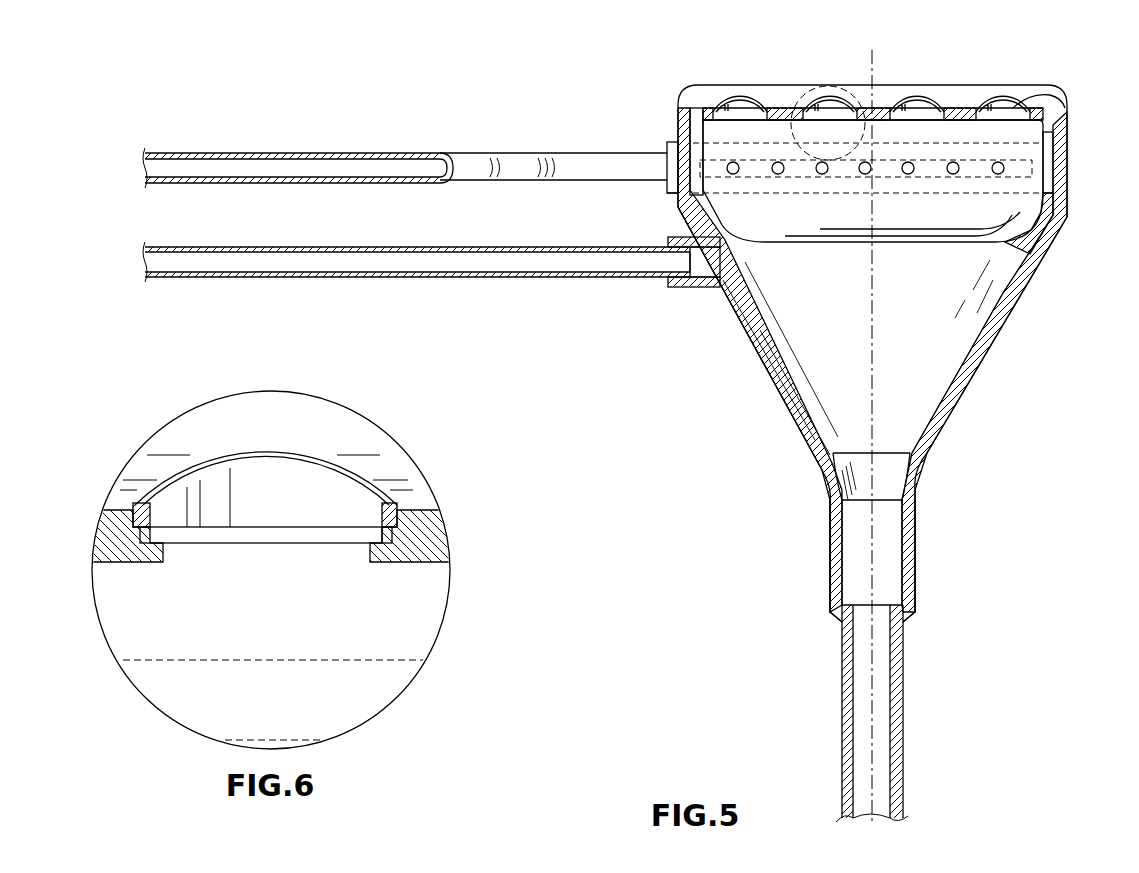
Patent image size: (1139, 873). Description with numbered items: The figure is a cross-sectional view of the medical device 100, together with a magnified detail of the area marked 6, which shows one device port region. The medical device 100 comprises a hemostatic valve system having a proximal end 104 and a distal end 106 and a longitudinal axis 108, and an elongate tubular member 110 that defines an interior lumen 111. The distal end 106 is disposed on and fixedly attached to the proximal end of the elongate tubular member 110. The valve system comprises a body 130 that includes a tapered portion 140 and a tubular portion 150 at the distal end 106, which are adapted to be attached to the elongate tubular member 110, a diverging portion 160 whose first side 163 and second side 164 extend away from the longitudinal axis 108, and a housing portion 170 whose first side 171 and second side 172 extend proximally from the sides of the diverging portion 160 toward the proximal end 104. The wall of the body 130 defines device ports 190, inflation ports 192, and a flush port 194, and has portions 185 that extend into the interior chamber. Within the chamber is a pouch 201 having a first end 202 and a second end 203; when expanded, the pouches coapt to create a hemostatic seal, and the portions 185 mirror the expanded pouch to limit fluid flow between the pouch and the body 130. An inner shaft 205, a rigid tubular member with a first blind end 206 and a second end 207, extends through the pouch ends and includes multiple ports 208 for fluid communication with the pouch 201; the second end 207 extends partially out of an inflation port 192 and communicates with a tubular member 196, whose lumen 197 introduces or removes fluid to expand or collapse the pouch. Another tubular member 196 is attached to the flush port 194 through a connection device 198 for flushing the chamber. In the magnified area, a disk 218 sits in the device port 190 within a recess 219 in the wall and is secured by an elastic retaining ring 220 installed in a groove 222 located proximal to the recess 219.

In FIG. 5, the medical device 100 is at (624, 485).
In FIG. 5, the proximal end 104 is at (663, 86).
In FIG. 5, the distal end 106 is at (797, 658).
In FIG. 5, the longitudinal axis 108 is at (876, 763).
In FIG. 5, the elongate tubular member 110 is at (905, 720).
In FIG. 5, the interior lumen 111 is at (864, 743).
In FIG. 5, the body 130 is at (787, 102).
In FIG. 5, the tapered portion 140 is at (916, 613).
In FIG. 5, the tubular portion 150 is at (916, 555).
In FIG. 5, the diverging portion 160 is at (917, 483).
In FIG. 5, the first side 163 is at (823, 471).
In FIG. 5, the second side 164 is at (919, 453).
In FIG. 5, the housing portion 170 is at (972, 362).
In FIG. 5, the first side 171 is at (760, 362).
In FIG. 5, the second side 172 is at (1012, 323).
In FIG. 5, the portions 185 is at (694, 110).
In FIG. 5, the device ports 190 is at (1020, 100).
In FIG. 5, the inflation ports 192 is at (676, 140).
In FIG. 5, the flush port 194 is at (712, 272).
In FIG. 5, the tubular members 196 is at (460, 155).
In FIG. 5, the lumen 197 is at (290, 158).
In FIG. 5, the connection device 198 is at (667, 284).
In FIG. 5, the pouch 201 is at (897, 245).
In FIG. 5, the first end 202 is at (967, 274).
In FIG. 5, the second end 203 is at (808, 261).
In FIG. 5, the inner shaft 205 is at (905, 196).
In FIG. 5, the first blind end 206 is at (1060, 181).
In FIG. 5, the second end 207 is at (675, 194).
In FIG. 5, the ports 208 is at (790, 178).
In FIG. 5, the disk 218 is at (917, 108).
In FIG. 6, the disk 218 is at (270, 546).
In FIG. 6, the recess 219 is at (390, 545).
In FIG. 6, the retaining ring 220 is at (130, 512).
In FIG. 6, the groove 222 is at (398, 515).
In FIG. 5, the magnified view area 6 is at (838, 87).